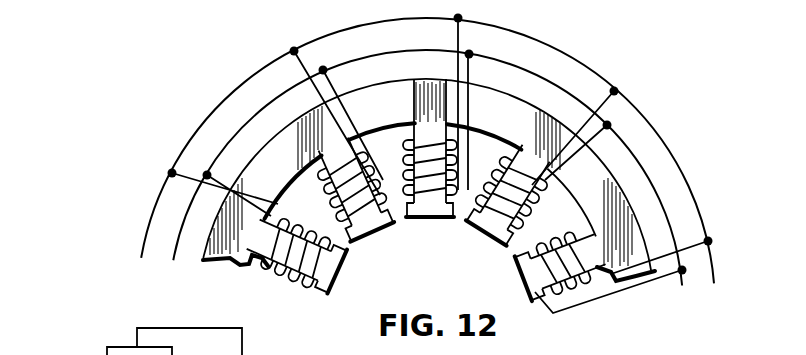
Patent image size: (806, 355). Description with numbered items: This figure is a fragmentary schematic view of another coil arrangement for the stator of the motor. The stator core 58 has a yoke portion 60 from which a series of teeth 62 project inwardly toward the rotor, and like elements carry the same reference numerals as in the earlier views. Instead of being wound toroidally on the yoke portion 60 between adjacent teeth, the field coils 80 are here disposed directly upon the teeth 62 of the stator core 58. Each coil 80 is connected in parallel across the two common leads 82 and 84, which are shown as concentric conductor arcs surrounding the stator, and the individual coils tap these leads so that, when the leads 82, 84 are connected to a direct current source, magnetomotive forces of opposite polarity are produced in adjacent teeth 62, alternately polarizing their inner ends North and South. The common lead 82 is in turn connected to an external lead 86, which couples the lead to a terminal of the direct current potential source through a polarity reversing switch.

The stator core 58 is at (232, 257).
The yoke portion 60 is at (638, 272).
The teeth 62 is at (525, 285).
The field coils 80 is at (287, 276).
The common lead 82 is at (673, 152).
The common lead 84 is at (682, 272).
The external lead 86 is at (142, 330).